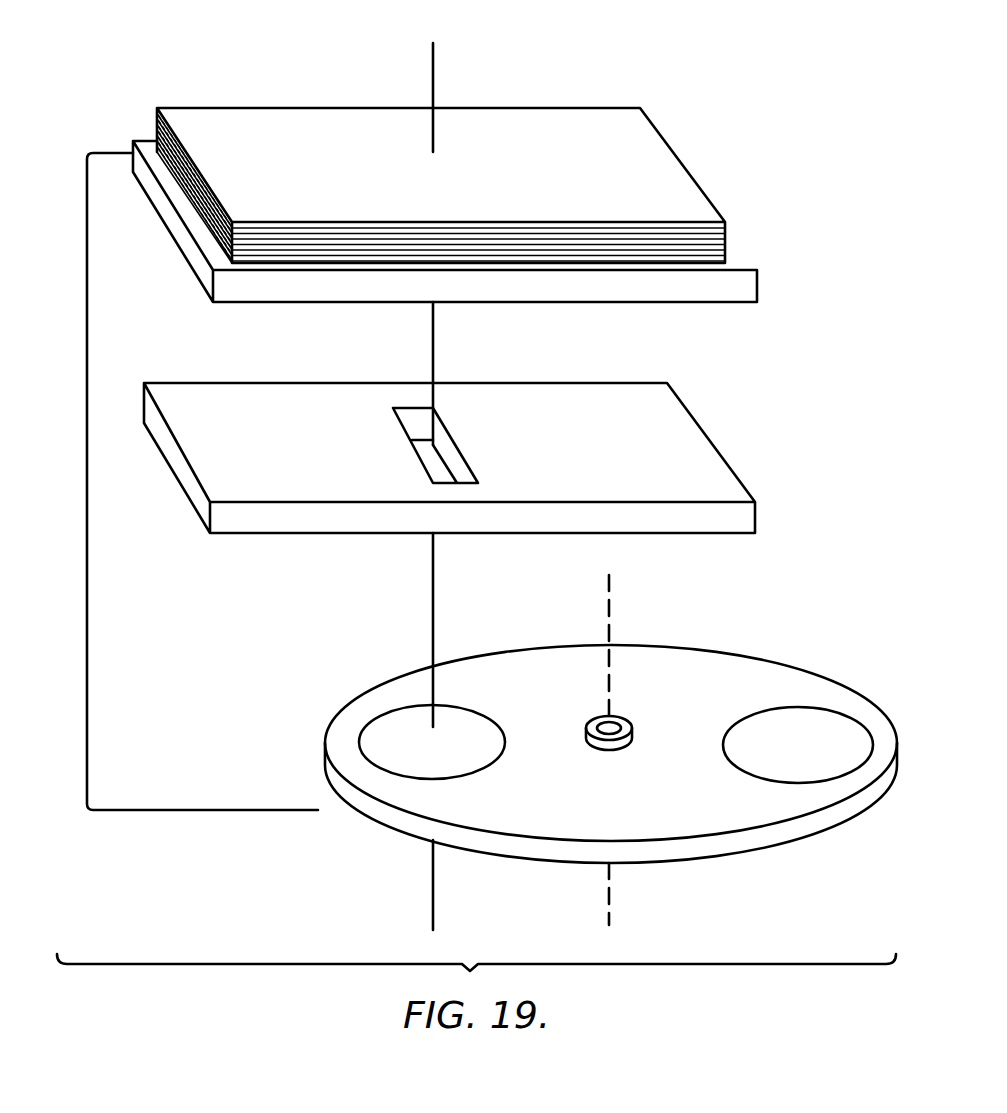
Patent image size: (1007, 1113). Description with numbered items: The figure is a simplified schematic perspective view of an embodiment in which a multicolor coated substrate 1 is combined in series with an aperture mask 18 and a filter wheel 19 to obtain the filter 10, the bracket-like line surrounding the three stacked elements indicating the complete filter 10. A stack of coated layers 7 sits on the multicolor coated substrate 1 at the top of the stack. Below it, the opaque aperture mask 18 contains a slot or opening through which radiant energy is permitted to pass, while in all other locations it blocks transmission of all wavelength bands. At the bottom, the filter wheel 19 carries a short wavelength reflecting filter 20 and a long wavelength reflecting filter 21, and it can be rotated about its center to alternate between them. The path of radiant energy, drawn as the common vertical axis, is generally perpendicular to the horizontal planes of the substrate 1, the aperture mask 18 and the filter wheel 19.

The multicolor coated substrate 1 is at (190, 267).
The stack of sheets 7 is at (665, 142).
The filter 10 is at (87, 570).
The aperture mask 18 is at (705, 431).
The filter wheel 19 is at (743, 653).
The short wavelength reflecting filter 20 is at (813, 723).
The long wavelength reflecting filter 21 is at (403, 717).